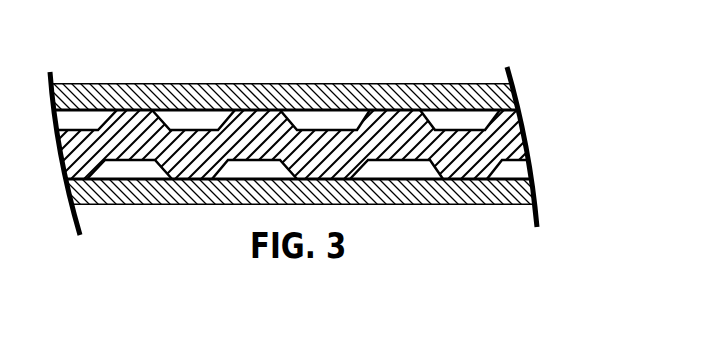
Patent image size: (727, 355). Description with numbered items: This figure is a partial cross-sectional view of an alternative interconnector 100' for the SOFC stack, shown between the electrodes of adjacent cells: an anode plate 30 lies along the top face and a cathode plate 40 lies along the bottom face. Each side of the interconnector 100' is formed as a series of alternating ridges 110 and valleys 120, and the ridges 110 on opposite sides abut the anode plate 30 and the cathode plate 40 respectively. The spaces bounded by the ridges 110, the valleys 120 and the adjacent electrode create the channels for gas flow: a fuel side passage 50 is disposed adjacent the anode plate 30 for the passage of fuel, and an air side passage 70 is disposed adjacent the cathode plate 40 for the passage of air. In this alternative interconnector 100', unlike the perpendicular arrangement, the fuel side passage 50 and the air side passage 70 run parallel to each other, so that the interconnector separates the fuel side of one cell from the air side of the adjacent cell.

The anode plate 30 is at (452, 82).
The cathode plate 40 is at (478, 186).
The fuel side passage 50 is at (187, 118).
The air side passage 70 is at (131, 172).
The ridges 110 is at (398, 110).
The valleys 120 is at (323, 124).
The alternative interconnector 100' is at (321, 144).